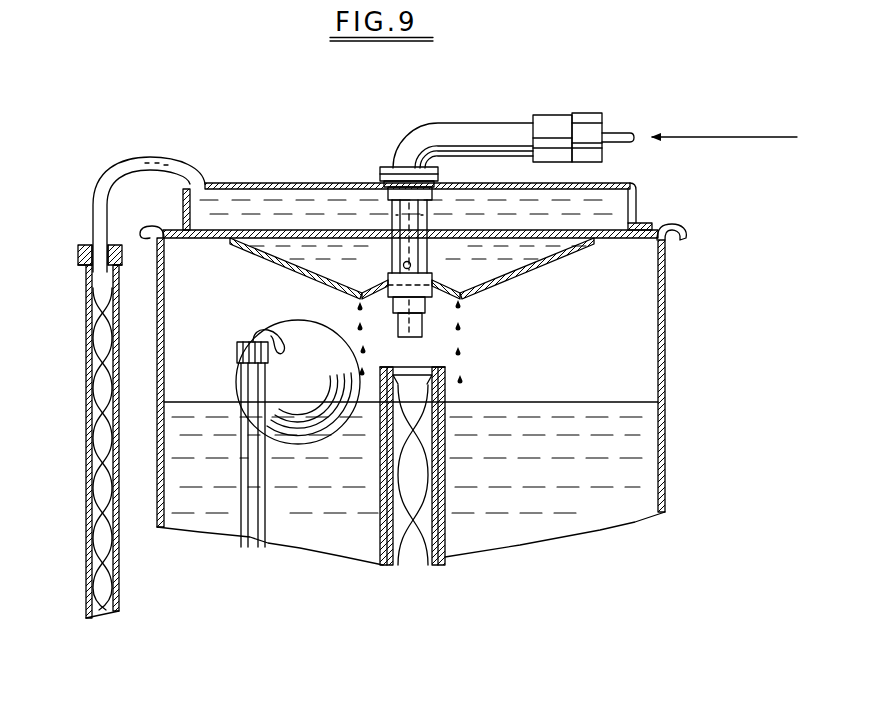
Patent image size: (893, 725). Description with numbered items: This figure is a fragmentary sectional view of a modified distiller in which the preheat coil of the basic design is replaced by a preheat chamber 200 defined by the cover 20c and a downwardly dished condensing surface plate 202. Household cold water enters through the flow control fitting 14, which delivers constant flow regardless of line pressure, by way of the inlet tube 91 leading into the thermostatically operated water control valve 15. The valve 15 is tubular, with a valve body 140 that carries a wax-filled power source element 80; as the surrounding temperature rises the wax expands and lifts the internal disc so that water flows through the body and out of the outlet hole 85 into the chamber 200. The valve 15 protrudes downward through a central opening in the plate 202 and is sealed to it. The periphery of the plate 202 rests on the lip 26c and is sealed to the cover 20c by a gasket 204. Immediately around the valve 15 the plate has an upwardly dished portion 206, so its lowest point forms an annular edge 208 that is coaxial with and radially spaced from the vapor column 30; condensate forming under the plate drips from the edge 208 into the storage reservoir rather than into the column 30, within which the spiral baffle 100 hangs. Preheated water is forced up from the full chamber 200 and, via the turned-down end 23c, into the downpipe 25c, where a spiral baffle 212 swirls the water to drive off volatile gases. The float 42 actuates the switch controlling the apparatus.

The flow control fitting 14 is at (383, 156).
The water control valve 15 is at (436, 220).
The cover 20c is at (320, 184).
The coil end 23c is at (102, 203).
The vent tube or downpipe 25c is at (88, 412).
The lip 26c is at (672, 242).
The vapor column 30 is at (453, 395).
The float 42 is at (320, 313).
The power source element 80 is at (427, 333).
The outlet hole 85 is at (405, 262).
The cold water inlet tube 91 is at (473, 133).
The spiral baffle 100 is at (410, 395).
The valve body 140 is at (400, 215).
The preheat chamber 200 is at (258, 200).
The condensing surface plate 202 is at (530, 260).
The gasket 204 is at (652, 224).
The upwardly dished portion 206 is at (470, 290).
The annular edge 208 is at (464, 300).
The spiral plate or baffle 212 is at (110, 500).